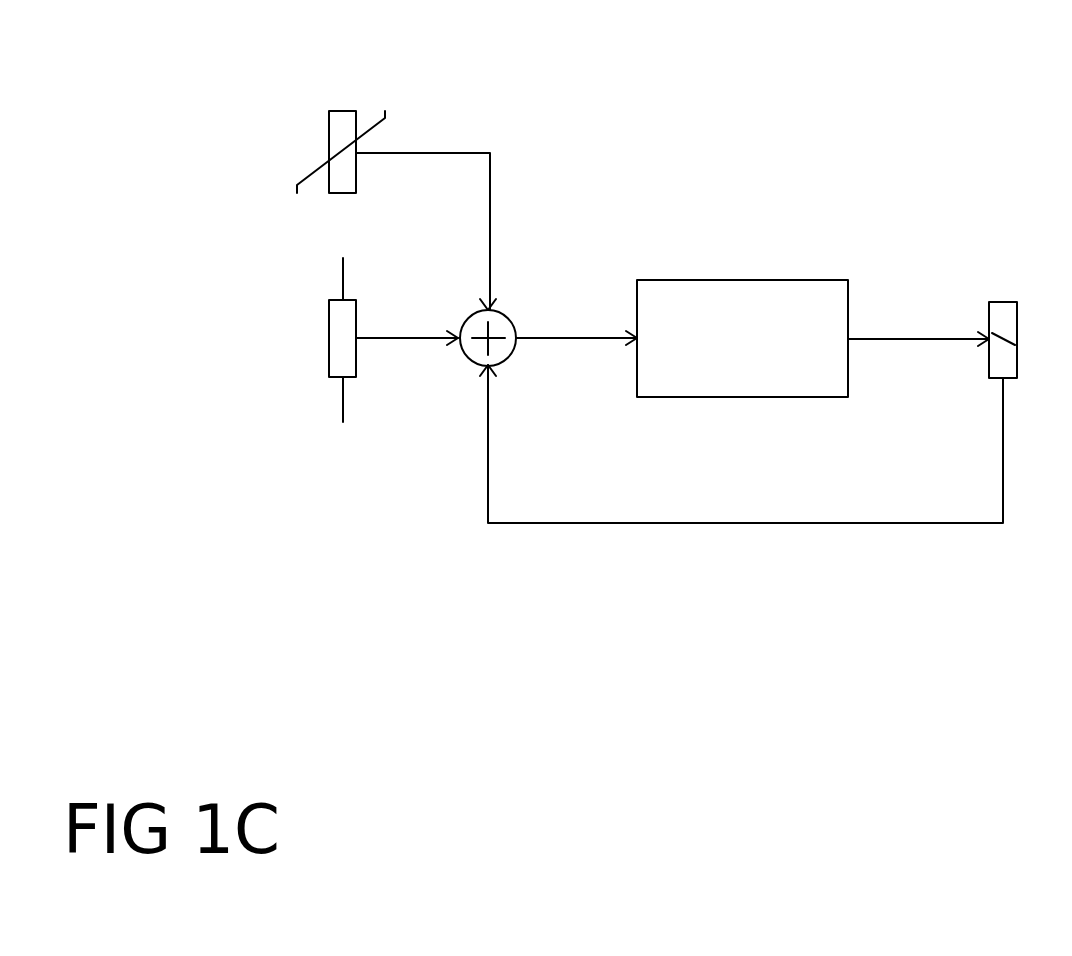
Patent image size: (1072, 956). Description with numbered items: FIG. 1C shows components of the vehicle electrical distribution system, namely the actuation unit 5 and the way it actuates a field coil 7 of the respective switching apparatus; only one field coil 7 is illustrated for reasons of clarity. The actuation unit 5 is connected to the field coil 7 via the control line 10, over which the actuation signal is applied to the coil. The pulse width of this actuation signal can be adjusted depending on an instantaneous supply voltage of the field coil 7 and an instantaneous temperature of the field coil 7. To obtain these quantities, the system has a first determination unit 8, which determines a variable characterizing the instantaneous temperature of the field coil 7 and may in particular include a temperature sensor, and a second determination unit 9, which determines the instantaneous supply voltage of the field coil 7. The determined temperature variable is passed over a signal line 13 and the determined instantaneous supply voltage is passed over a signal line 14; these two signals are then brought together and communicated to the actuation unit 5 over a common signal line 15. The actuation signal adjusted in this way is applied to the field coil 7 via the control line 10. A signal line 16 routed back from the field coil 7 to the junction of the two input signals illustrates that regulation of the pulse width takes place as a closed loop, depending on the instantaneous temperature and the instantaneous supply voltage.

The actuation unit 5 is at (718, 312).
The field coil 7 is at (1006, 322).
The first determination unit 8 is at (256, 124).
The second determination unit 9 is at (302, 349).
The control line 10 is at (895, 341).
The signal line 13 is at (490, 211).
The signal line 14 is at (389, 343).
The common signal line 15 is at (560, 343).
The signal line 16 is at (772, 524).